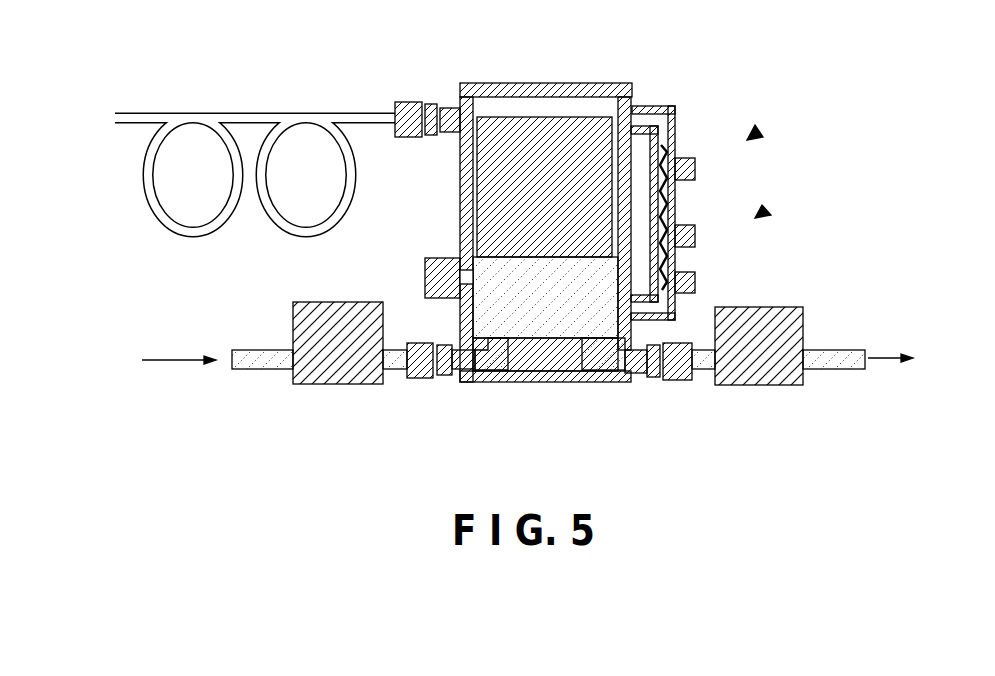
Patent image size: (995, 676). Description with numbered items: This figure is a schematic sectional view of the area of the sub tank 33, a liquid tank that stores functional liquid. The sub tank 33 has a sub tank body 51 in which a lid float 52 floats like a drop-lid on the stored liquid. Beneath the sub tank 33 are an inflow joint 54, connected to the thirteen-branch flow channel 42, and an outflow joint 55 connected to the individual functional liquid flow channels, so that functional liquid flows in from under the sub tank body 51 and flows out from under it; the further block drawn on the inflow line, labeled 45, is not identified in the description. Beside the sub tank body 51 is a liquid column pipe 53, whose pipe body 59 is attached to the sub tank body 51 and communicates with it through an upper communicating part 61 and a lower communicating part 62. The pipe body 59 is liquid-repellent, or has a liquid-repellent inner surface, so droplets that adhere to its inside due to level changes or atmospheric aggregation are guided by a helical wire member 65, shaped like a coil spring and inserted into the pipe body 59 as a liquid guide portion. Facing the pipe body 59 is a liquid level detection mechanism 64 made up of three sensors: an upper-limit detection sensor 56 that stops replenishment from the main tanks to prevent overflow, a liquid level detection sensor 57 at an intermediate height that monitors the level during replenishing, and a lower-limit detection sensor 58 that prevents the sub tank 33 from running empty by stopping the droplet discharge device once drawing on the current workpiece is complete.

The sub tank 33 is at (513, 83).
The thirteen-branch flow channel 42 is at (268, 370).
The pump 45 is at (340, 376).
The sub tank body 51 is at (554, 89).
The lid float 52 is at (477, 189).
The liquid column pipe 53 is at (763, 135).
The inflow joint 54 is at (419, 379).
The outflow joint 55 is at (680, 381).
The upper-limit detection sensor 56 is at (696, 170).
The liquid level detection sensor 57 is at (696, 236).
The lower-limit detection sensor 58 is at (696, 283).
The pipe body 59 is at (677, 131).
The upper communicating part 61 is at (618, 108).
The lower communicating part 62 is at (631, 374).
The liquid level detection mechanism 64 is at (771, 213).
The helical wire member 65 is at (662, 143).